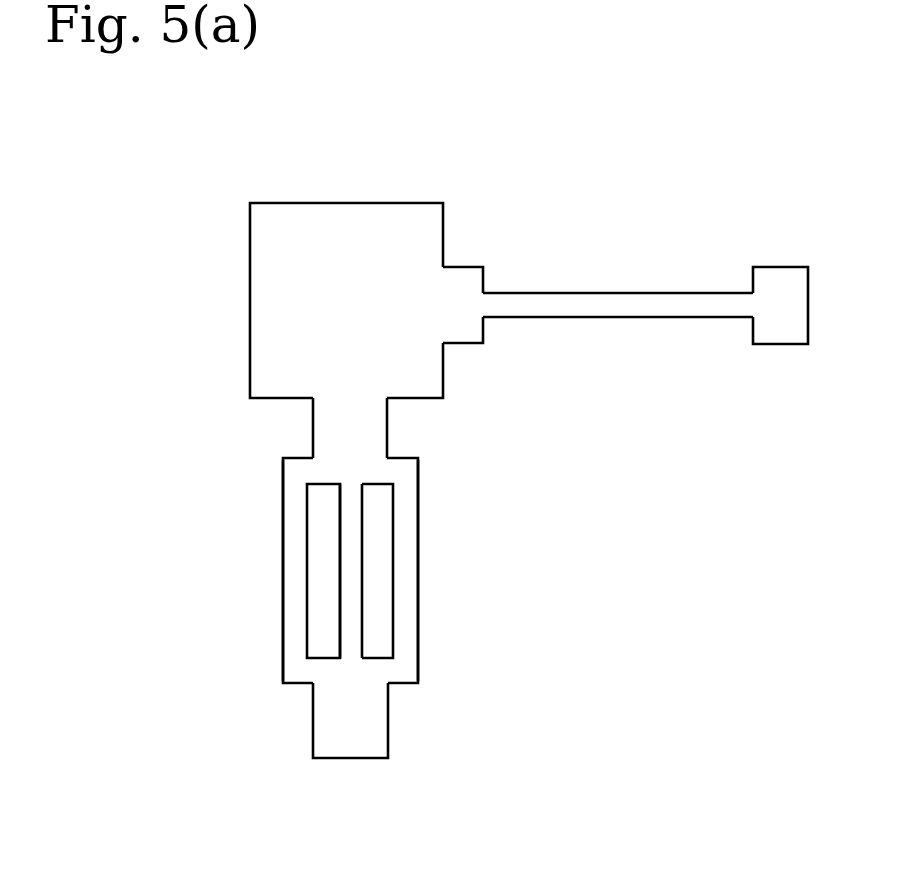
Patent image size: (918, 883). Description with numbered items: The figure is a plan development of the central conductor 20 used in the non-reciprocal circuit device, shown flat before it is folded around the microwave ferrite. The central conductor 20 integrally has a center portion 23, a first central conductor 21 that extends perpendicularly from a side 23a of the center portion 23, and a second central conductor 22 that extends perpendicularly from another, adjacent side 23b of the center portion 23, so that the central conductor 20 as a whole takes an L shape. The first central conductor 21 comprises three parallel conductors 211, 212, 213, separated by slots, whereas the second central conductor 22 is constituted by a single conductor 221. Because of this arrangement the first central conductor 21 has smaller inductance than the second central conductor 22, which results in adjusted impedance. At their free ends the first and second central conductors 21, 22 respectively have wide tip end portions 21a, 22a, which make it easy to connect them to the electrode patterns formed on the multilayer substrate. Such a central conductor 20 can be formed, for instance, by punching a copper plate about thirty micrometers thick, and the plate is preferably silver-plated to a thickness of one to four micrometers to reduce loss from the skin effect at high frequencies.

The central conductor 20 is at (480, 193).
The first central conductor 21 is at (360, 570).
The wide tip end portion 21a is at (357, 708).
The conductor (line) 211 is at (412, 557).
The conductor (line) 212 is at (347, 583).
The conductor (line) 213 is at (288, 522).
The second central conductor 22 is at (618, 307).
The wide tip end portion 22a is at (782, 293).
The conductor (line) 221 is at (637, 297).
The center portion 23 is at (342, 250).
The side of center portion 23a is at (422, 400).
The adjacent side of center portion 23b is at (445, 232).